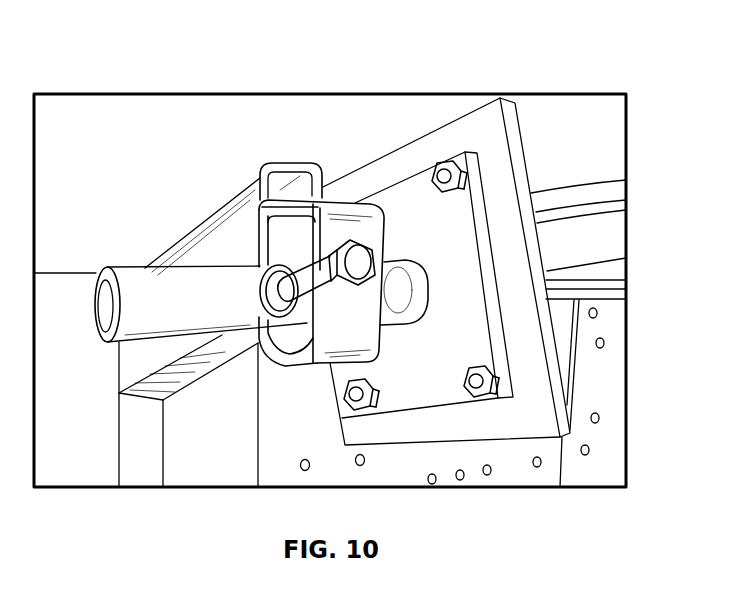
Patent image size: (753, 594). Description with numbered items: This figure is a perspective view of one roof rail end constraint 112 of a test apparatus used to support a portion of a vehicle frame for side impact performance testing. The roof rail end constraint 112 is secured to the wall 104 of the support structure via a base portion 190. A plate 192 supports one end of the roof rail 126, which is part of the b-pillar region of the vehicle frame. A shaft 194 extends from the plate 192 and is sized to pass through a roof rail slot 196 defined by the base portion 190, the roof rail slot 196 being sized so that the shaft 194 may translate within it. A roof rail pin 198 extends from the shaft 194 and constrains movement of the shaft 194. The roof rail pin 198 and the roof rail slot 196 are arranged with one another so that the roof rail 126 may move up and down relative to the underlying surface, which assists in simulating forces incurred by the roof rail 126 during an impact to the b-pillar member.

The wall 104 is at (607, 315).
The roof rail end constraint 112 is at (378, 64).
The roof rail 126 is at (598, 224).
The base portion 190 is at (205, 232).
The plate 192 is at (407, 197).
The shaft 194 is at (200, 303).
The roof rail slot 196 is at (260, 178).
The roof rail pin 198 is at (293, 372).